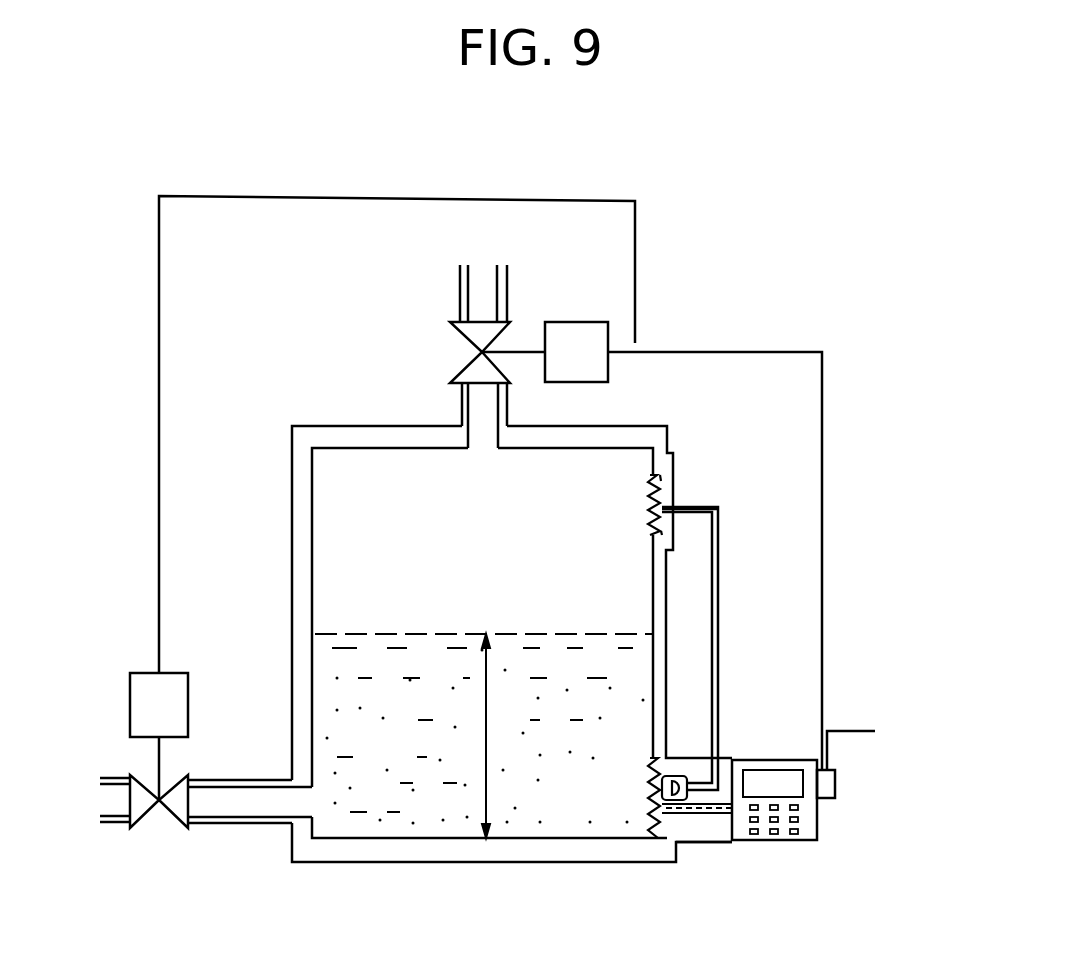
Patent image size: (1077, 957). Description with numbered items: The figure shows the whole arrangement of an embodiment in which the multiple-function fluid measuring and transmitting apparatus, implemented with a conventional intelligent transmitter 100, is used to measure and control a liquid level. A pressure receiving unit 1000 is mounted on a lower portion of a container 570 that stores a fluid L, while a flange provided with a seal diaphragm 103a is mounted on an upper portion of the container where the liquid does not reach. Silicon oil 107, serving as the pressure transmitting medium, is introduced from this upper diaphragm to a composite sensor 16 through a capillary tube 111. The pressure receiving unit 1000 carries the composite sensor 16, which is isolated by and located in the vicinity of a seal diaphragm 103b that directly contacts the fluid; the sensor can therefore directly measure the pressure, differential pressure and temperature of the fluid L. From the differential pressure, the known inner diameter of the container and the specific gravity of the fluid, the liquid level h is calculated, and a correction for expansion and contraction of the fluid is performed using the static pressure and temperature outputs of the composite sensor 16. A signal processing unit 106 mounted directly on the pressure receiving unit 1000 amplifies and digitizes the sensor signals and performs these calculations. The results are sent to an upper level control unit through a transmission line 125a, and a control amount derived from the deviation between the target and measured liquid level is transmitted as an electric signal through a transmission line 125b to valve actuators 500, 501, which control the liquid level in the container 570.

The composite sensor 16 is at (652, 773).
The intelligent transmitter 100 is at (795, 725).
The seal diaphragm 103a is at (653, 505).
The seal diaphragm 103b is at (652, 800).
The signal processing unit 106 is at (800, 842).
The silicon oil 107 is at (718, 630).
The capillary tube 111 is at (718, 505).
The transmission line 125a is at (852, 731).
The transmission line 125b is at (822, 555).
The valve actuator 500 is at (608, 330).
The valve actuator 501 is at (183, 673).
The container 570 is at (348, 426).
The pressure receiving unit 1000 is at (698, 842).